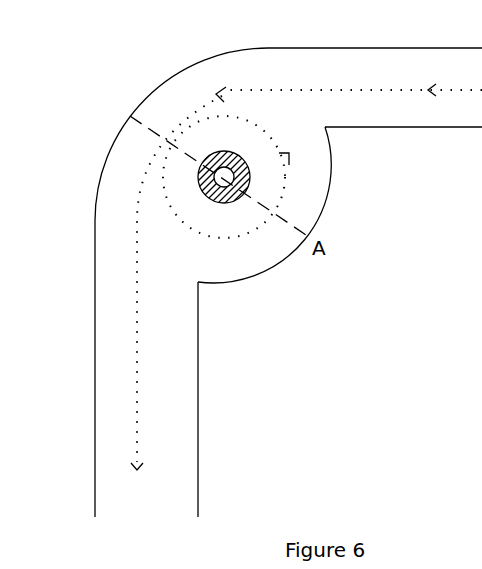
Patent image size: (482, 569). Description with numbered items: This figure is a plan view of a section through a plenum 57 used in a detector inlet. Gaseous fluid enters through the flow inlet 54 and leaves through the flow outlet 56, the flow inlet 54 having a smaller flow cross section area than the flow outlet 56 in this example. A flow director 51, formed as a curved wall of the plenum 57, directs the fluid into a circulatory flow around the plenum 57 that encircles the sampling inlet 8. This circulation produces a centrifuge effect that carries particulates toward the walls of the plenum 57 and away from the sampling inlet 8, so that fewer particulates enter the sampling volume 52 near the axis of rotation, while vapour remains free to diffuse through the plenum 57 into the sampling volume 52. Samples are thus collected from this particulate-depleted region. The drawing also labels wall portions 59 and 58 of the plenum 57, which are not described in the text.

The flow director 51 is at (103, 90).
The plenum 57 is at (162, 92).
The top wall 59 is at (227, 54).
The flow inlet 54 is at (407, 127).
The inner curved wall 58 is at (264, 262).
The flow outlet 56 is at (198, 422).
The sampling volume 52 is at (227, 155).
The sampling inlet 8 is at (226, 177).